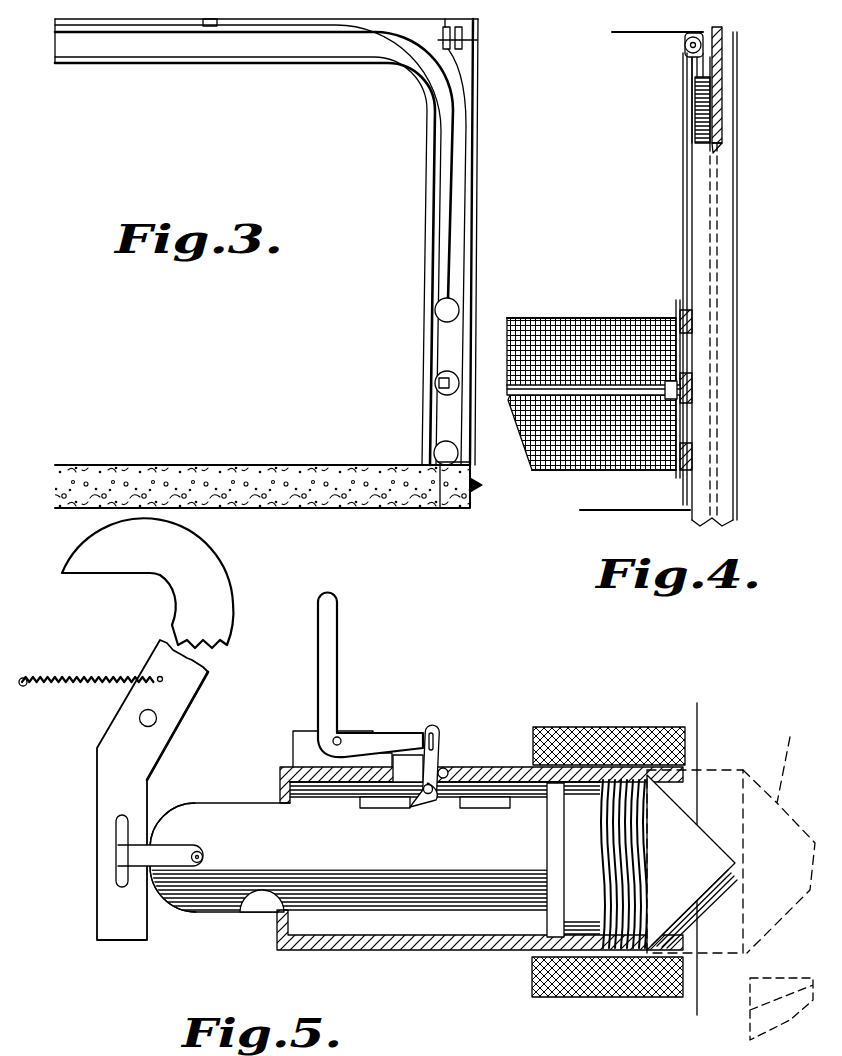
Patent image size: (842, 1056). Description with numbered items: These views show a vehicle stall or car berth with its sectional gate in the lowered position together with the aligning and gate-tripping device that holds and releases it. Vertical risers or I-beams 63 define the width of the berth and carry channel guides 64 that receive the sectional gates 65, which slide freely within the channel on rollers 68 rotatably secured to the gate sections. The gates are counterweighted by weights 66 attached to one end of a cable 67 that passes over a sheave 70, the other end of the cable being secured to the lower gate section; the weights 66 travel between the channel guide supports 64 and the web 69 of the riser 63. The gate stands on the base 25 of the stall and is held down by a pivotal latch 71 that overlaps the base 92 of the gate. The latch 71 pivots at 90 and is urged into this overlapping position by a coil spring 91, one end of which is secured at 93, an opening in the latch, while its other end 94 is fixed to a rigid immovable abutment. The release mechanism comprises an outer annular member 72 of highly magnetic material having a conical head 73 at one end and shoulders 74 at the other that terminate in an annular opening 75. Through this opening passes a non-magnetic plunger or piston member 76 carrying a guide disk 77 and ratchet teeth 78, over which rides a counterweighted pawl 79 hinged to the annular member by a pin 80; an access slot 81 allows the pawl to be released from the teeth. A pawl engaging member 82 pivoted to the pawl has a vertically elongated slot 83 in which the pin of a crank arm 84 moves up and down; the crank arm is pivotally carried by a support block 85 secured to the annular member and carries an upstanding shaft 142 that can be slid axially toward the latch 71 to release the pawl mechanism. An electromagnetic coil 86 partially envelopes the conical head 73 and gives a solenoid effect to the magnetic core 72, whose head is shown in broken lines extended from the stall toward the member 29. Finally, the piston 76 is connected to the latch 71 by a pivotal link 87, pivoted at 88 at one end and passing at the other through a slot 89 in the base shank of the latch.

In FIG. 3, the floor 25 is at (262, 472).
In FIG. 5, the door frame member 29 is at (750, 1010).
In FIG. 3, the vertical riser 63 is at (468, 60).
In FIG. 3, the channel guide 64 is at (245, 52).
In FIG. 3, the sectional gate 65 is at (446, 340).
In FIG. 4, the sectional gate 65 is at (689, 200).
In FIG. 4, the weight 66 is at (724, 120).
In FIG. 4, the cable 67 is at (700, 60).
In FIG. 4, the roller 68 is at (680, 318).
In FIG. 4, the web 69 is at (724, 62).
In FIG. 4, the sheave 70 is at (685, 46).
In FIG. 3, the pivotal latch 71 is at (465, 463).
In FIG. 5, the pivotal latch 71 is at (188, 568).
In FIG. 5, the outer annular member 72 is at (456, 950).
In FIG. 3, the conical head 73 is at (482, 485).
In FIG. 5, the conical head 73 is at (690, 845).
In FIG. 5, the shoulders 74 is at (283, 773).
In FIG. 5, the annular opening 75 is at (283, 808).
In FIG. 5, the piston member 76 is at (387, 872).
In FIG. 5, the guide disk 77 is at (552, 870).
In FIG. 5, the ratchet teeth 78 is at (358, 806).
In FIG. 5, the counter-weighted pawl 79 is at (418, 805).
In FIG. 5, the pin 80 is at (445, 773).
In FIG. 5, the access slot 81 is at (400, 755).
In FIG. 5, the pawl engaging member 82 is at (449, 767).
In FIG. 5, the vertically elongated slot 83 is at (437, 736).
In FIG. 5, the crank arm 84 is at (360, 735).
In FIG. 5, the support block 85 is at (300, 742).
In FIG. 5, the electromagnetic coil 86 is at (632, 732).
In FIG. 5, the pivotal link 87 is at (118, 855).
In FIG. 5, the pivot 88 is at (204, 856).
In FIG. 5, the slot 89 is at (118, 827).
In FIG. 5, the pivot 90 is at (139, 718).
In FIG. 5, the coil spring 91 is at (82, 680).
In FIG. 3, the base of the gate 92 is at (447, 470).
In FIG. 5, the opening 93 is at (160, 677).
In FIG. 5, the spring end 94 is at (25, 678).
In FIG. 5, the upstanding shaft 142 is at (330, 660).